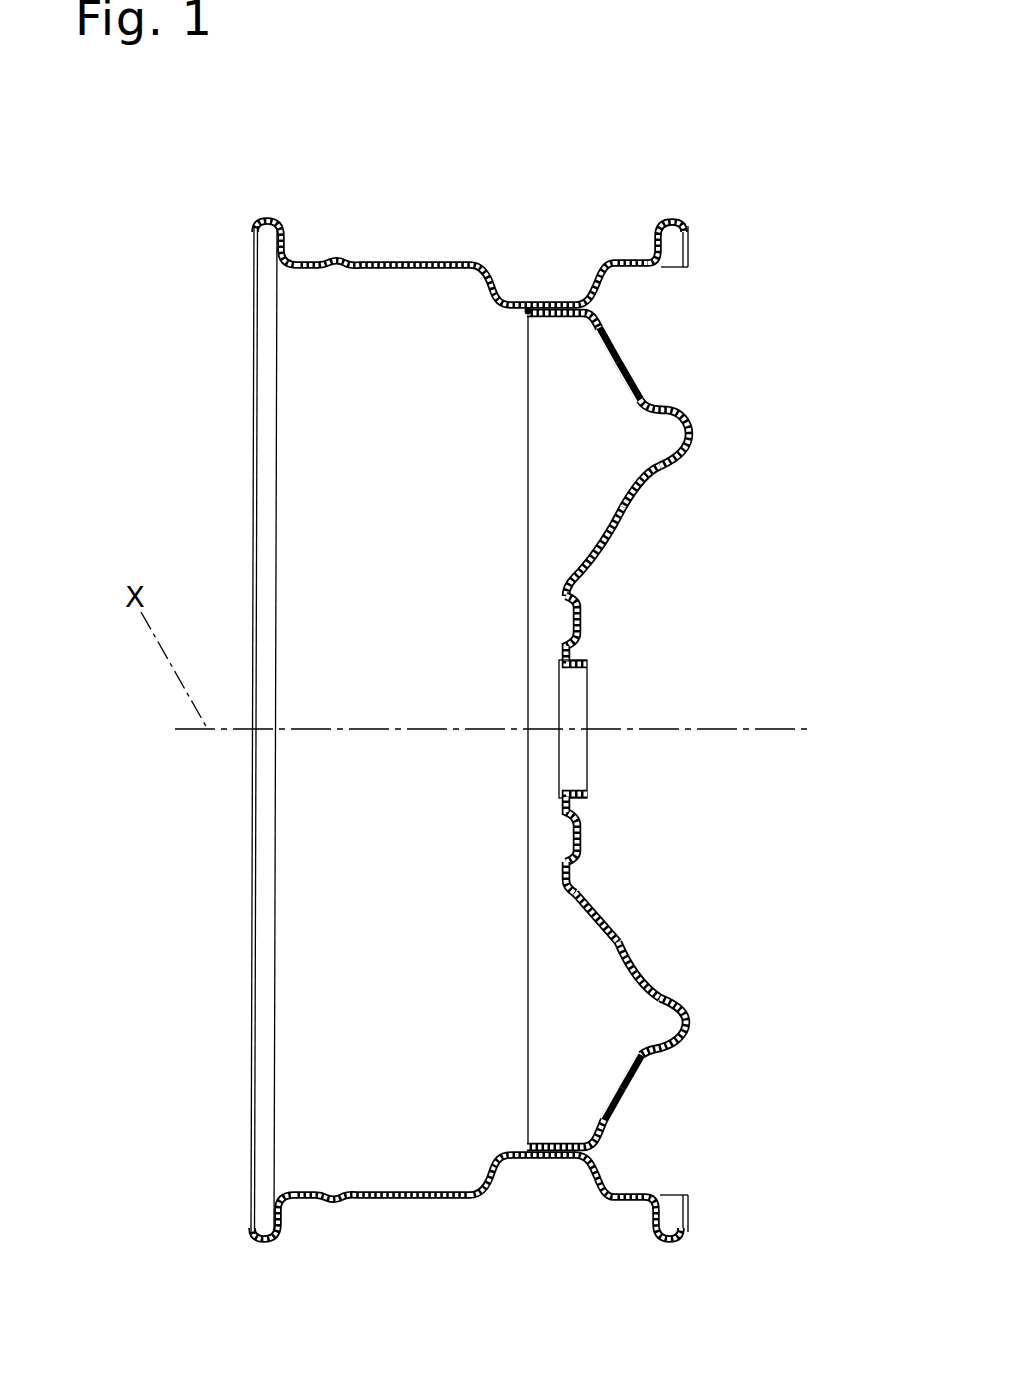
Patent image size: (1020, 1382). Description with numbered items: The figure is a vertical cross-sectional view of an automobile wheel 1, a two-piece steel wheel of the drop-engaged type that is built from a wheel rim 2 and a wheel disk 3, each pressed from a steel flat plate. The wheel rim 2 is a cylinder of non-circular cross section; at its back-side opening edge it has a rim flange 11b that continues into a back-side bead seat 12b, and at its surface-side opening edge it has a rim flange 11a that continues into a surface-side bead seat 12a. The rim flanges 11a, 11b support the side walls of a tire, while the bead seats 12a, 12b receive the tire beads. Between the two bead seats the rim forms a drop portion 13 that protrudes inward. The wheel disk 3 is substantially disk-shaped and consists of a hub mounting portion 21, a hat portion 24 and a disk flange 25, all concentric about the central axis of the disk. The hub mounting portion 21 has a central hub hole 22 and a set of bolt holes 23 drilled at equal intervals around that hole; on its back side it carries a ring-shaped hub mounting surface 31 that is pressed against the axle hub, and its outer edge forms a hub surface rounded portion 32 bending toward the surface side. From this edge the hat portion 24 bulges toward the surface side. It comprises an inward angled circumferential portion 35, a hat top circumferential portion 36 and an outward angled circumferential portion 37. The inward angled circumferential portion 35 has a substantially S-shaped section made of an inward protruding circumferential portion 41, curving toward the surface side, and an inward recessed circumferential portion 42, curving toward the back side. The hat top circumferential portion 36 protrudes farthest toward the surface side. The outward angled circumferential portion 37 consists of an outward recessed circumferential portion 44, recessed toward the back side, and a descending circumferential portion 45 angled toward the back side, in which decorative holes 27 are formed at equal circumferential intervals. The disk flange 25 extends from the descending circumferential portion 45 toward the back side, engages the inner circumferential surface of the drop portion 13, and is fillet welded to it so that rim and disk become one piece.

The automobile wheel 1 is at (767, 246).
The wheel rim 2 is at (430, 258).
The wheel disk 3 is at (648, 1074).
The rim flange 11a is at (688, 226).
The rim flange 11b is at (266, 222).
The surface-side bead seat 12a is at (639, 262).
The back-side bead seat 12b is at (304, 262).
The drop portion 13 is at (530, 309).
The hub mounting portion 21 is at (572, 818).
The hub hole 22 is at (567, 700).
The bolt holes 23 is at (572, 612).
The hat portion 24 is at (637, 497).
The disk flange 25 is at (527, 314).
The decorative holes 27 is at (616, 370).
The hub mounting surface 31 is at (560, 880).
The hub surface rounded portion 32 is at (568, 900).
The inward angled circumferential portion 35 is at (620, 528).
The hat top circumferential portion 36 is at (688, 434).
The outward angled circumferential portion 37 is at (605, 336).
The inward protruding circumferential portion 41 is at (606, 920).
The inward recessed circumferential portion 42 is at (640, 985).
The outward recessed circumferential portion 44 is at (638, 1052).
The descending circumferential portion 45 is at (607, 1125).